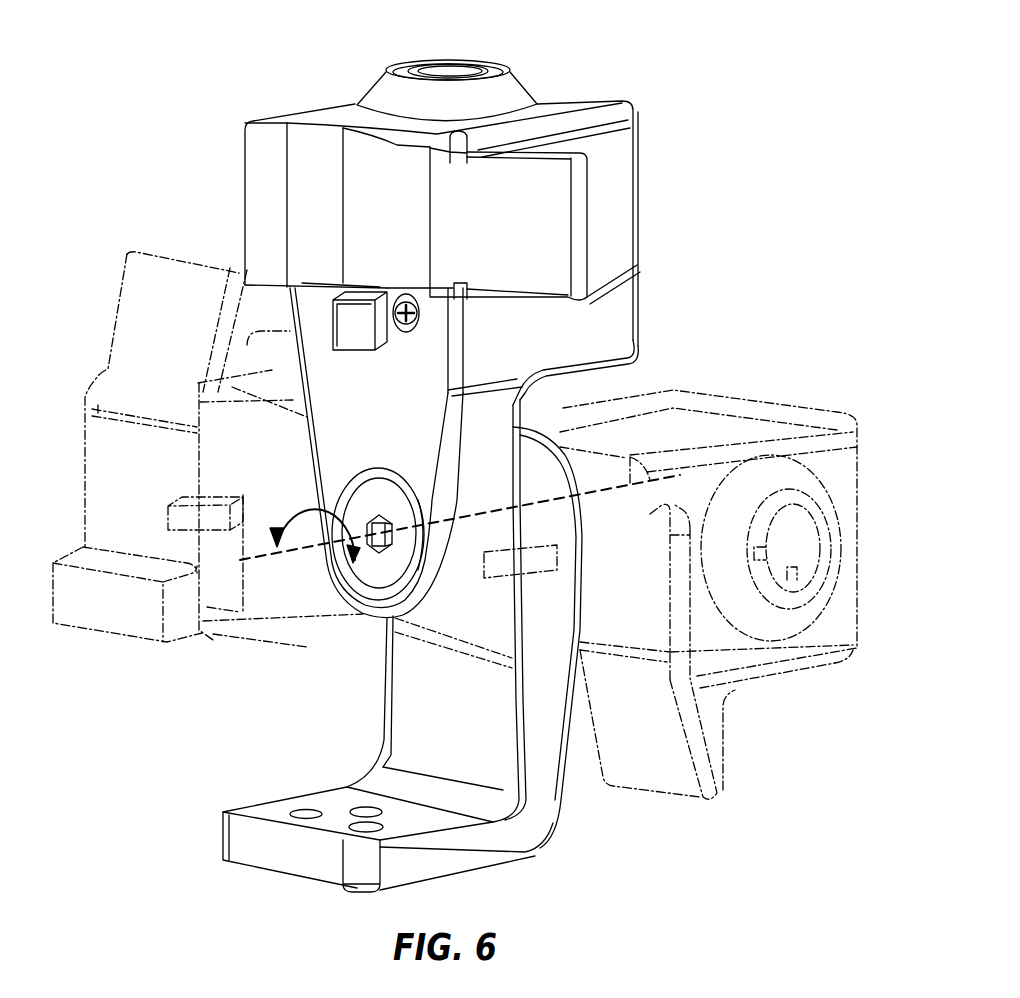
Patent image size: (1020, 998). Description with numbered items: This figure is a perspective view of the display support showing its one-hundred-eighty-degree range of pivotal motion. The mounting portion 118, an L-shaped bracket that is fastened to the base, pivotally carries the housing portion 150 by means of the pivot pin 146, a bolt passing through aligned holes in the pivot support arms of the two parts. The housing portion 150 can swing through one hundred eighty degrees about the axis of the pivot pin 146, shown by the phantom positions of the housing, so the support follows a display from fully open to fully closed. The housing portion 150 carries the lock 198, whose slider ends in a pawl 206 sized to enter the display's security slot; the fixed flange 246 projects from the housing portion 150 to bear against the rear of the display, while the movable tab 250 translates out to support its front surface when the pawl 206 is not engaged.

The mounting portion 118 is at (267, 808).
The pivot pin 146 is at (390, 571).
The housing portion 150 is at (640, 298).
The lock 198 is at (524, 56).
The pawl 206 is at (340, 322).
The fixed flange 246 is at (273, 165).
The movable tab 250 is at (612, 198).